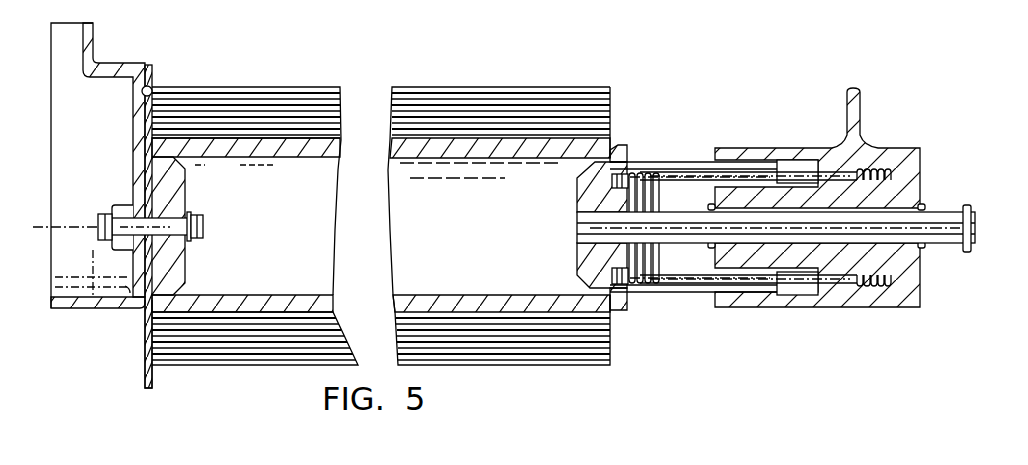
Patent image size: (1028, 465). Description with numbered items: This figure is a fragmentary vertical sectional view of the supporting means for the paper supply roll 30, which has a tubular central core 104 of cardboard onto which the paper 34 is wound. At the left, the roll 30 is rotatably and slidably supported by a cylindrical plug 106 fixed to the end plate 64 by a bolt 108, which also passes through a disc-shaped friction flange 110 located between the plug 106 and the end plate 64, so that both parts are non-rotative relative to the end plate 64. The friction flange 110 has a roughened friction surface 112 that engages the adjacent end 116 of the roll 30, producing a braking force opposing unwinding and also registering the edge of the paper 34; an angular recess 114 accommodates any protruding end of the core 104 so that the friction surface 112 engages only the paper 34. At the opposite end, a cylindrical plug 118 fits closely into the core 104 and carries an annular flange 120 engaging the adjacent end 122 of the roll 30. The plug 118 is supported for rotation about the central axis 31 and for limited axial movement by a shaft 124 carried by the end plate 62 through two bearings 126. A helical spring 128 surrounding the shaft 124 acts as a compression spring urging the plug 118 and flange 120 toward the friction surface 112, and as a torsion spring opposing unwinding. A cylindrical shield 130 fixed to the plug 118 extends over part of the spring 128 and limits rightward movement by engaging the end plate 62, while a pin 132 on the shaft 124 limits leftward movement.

The supply roll 30 is at (563, 363).
The central axis 31 is at (91, 222).
The paper 34 is at (292, 87).
The end plate 62 is at (862, 308).
The end plate 64 is at (106, 309).
The tubular central core 104 is at (283, 157).
The cylindrical plug 106 is at (186, 262).
The bolt 108 is at (192, 218).
The friction flange 110 is at (148, 76).
The friction surface 112 is at (152, 377).
The angular recess 114 is at (186, 172).
The adjacent end of the roll 116 is at (150, 84).
The cylindrical plug 118 is at (577, 188).
The annular flange 120 is at (616, 311).
The adjacent end of the roll 122 is at (612, 96).
The shaft 124 is at (705, 244).
The bearings 126 is at (713, 206).
The helical spring 128 is at (648, 283).
The cylindrical shield 130 is at (672, 162).
The pin 132 is at (972, 247).